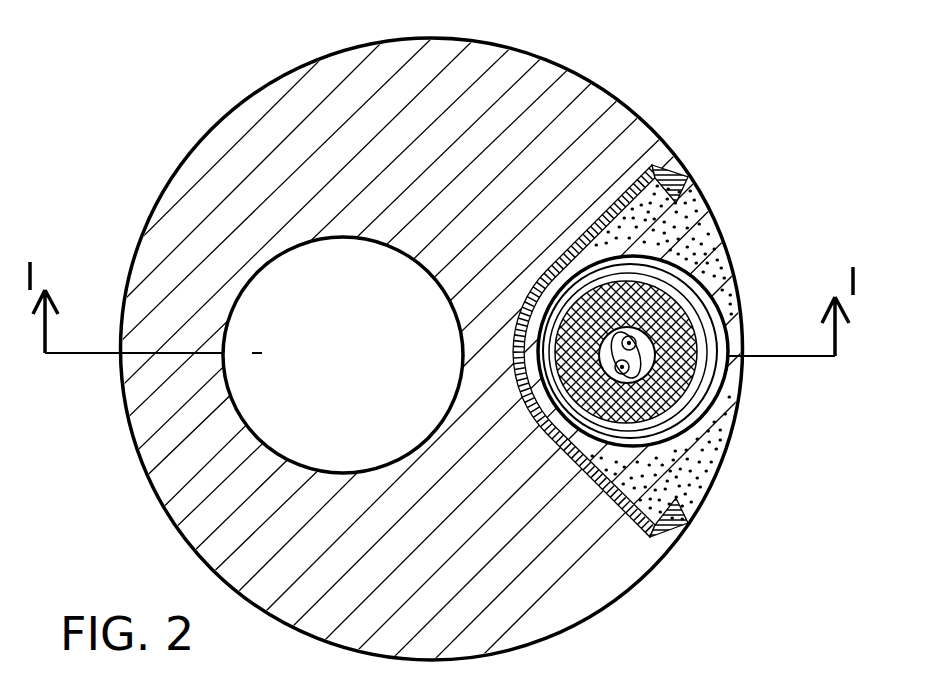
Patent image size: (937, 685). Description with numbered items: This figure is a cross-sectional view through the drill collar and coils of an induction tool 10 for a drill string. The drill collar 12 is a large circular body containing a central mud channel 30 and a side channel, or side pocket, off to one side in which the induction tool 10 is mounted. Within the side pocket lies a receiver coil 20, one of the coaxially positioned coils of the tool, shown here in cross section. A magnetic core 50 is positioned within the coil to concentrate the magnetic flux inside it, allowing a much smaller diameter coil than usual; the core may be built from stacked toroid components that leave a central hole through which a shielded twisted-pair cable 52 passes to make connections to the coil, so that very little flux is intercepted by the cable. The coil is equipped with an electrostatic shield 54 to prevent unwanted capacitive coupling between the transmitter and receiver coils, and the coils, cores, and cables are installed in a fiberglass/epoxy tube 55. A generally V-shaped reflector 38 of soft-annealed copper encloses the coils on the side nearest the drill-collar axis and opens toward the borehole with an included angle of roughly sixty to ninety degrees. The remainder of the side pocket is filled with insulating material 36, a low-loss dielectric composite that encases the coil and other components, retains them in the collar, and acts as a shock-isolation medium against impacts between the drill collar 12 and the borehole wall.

The induction tool 10 is at (205, 84).
The drill collar 12 is at (562, 592).
The receiver coil 20 is at (672, 383).
The mud channel 30 is at (357, 427).
The insulating material 36 is at (690, 486).
The reflector 38 is at (607, 210).
The magnetic core 50 is at (693, 422).
The shielded twisted-pair cable 52 is at (637, 330).
The electrostatic shield 54 is at (683, 300).
The fiberglass/epoxy tube 55 is at (690, 430).